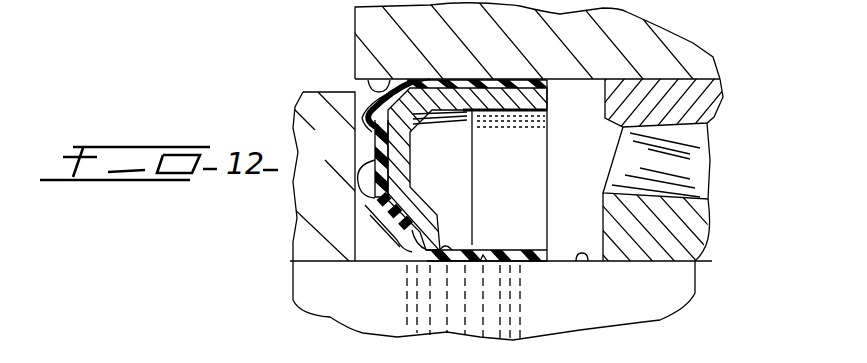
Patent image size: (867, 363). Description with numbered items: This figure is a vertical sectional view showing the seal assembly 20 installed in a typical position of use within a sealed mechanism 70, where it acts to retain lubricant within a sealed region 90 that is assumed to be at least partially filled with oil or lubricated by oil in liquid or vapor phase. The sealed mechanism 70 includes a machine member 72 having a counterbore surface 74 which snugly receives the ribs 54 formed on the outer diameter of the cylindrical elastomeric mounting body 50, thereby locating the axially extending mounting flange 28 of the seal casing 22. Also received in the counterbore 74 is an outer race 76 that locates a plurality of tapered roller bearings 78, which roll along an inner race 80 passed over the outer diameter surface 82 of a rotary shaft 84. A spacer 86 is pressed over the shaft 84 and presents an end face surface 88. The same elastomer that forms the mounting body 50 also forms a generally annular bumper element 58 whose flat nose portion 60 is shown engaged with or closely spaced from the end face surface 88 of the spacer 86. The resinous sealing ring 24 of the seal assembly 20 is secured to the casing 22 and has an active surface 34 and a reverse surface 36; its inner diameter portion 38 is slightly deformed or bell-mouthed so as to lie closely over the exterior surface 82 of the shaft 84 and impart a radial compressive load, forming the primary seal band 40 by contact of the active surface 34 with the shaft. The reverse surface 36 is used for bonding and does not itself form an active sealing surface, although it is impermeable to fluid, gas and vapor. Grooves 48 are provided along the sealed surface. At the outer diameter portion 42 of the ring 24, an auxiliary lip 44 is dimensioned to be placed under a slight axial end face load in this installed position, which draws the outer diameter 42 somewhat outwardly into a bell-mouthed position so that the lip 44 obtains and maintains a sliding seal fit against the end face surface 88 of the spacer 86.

The seal unit 20 is at (547, 165).
The casing unit 22 is at (522, 180).
The resinous sealing ring unit 24 is at (407, 212).
The axially extending mounting flange portion 28 is at (463, 98).
The active surface 34 is at (393, 237).
The reverse surface 36 is at (448, 255).
The inner diameter portion 38 is at (507, 252).
The primary seal band 40 is at (522, 262).
The outer diameter portion 42 is at (357, 176).
The auxiliary lip 44 is at (358, 158).
The grooves 48 is at (483, 263).
The cylindrical elastomeric body 50 is at (548, 90).
The ribs 54 is at (440, 80).
The annular bumper element 58 is at (363, 103).
The nose portion 60 is at (355, 108).
The sealed mechanism 70 is at (717, 51).
The machine member 72 is at (555, 57).
The counterbore surface 74 is at (387, 78).
The outer race 76 is at (706, 120).
The tapered roller bearings 78 is at (700, 178).
The inner race 80 is at (700, 240).
The outer diameter surface 82 is at (588, 262).
The rotary shaft 84 is at (347, 294).
The spacer 86 is at (293, 245).
The end face surface 88 is at (362, 218).
The sealed region 90 is at (590, 209).